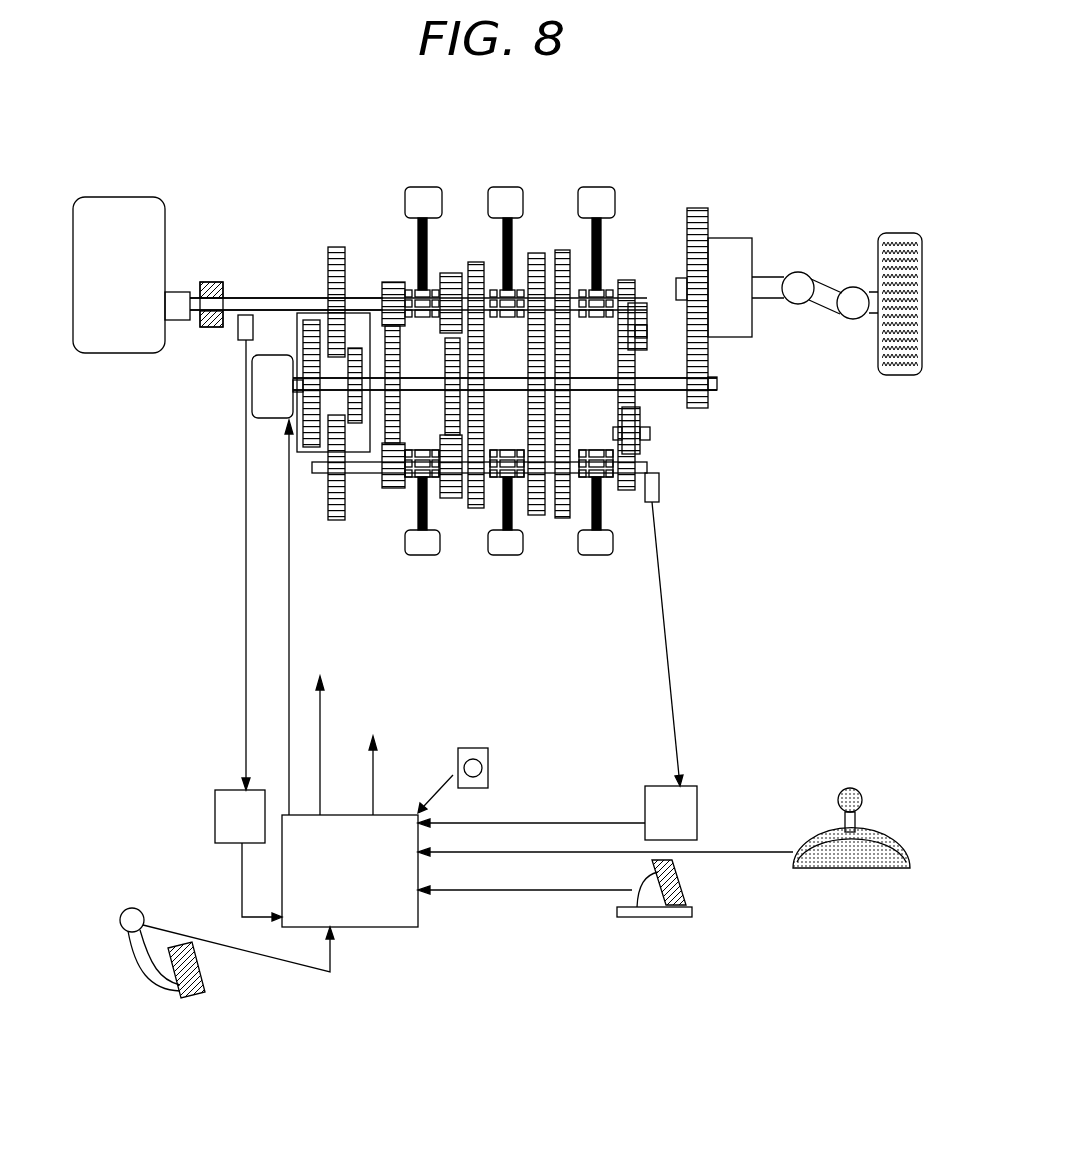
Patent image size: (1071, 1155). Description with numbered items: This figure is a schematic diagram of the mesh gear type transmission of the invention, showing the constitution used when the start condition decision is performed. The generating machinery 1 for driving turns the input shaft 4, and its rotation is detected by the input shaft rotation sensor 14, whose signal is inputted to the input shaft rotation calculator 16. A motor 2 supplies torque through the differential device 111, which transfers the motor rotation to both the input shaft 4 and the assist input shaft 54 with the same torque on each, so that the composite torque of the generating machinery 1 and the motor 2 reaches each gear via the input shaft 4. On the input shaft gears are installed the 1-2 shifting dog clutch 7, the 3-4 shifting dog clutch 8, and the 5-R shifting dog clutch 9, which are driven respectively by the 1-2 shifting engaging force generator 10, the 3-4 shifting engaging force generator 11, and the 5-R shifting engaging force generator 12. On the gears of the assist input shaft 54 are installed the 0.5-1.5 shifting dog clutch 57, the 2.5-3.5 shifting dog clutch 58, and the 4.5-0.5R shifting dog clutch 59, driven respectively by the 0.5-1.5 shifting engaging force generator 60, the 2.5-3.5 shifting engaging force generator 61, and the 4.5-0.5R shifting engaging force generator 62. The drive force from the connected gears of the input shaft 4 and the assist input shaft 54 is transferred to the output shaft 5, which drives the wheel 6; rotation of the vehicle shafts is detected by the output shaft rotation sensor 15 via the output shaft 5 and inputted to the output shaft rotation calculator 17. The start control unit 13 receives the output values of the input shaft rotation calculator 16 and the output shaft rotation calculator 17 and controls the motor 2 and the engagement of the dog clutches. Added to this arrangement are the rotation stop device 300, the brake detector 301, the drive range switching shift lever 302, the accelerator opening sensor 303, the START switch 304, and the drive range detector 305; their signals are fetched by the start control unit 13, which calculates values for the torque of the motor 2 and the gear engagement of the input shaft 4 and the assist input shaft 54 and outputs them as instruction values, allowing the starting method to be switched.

The generating machinery for driving 1 is at (127, 197).
The motor 2 is at (252, 390).
The input shaft 4 is at (270, 297).
The output shaft 5 is at (667, 392).
The wheel 6 is at (897, 376).
The 1-2 shifting dog clutch 7 is at (413, 287).
The 3-4 shifting dog clutch 8 is at (515, 290).
The 5-R shifting dog clutch 9 is at (606, 290).
The 1-2 shifting engaging force generator 10 is at (425, 187).
The 3-4 shifting engaging force generator 11 is at (510, 187).
The 5-R shifting engaging force generator 12 is at (605, 187).
The start control unit 13 is at (418, 912).
The input shaft rotation sensor 14 is at (238, 333).
The output shaft rotation sensor 15 is at (660, 490).
The input shaft rotation calculator 16 is at (215, 803).
The output shaft rotation calculator 17 is at (697, 813).
The assist input shaft 54 is at (322, 480).
The 0.5-1.5 shifting dog clutch 57 is at (430, 482).
The 2.5-3.5 shifting dog clutch 58 is at (515, 482).
The 4.5-0.5R shifting dog clutch 59 is at (604, 482).
The 0.5-1.5 shifting engaging force generator 60 is at (421, 556).
The 2.5-3.5 shifting engaging force generator 61 is at (506, 556).
The 4.5-0.5R shifting engaging force generator 62 is at (594, 556).
The differential device 111 is at (303, 452).
The rotation stop device 300 is at (212, 282).
The brake detector 301 is at (110, 907).
The drive range switching shift lever 302 is at (852, 788).
The accelerator opening sensor 303 is at (652, 918).
The START switch 304 is at (488, 757).
The drive range detector 305 is at (837, 870).